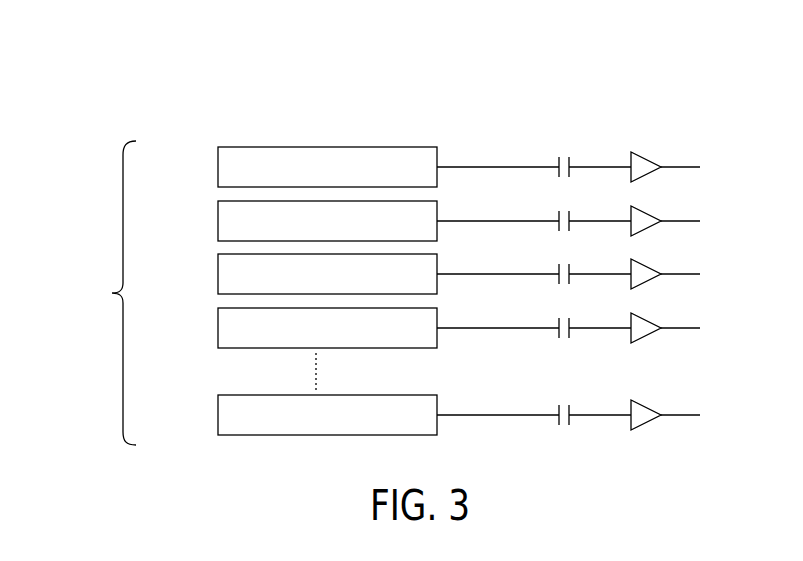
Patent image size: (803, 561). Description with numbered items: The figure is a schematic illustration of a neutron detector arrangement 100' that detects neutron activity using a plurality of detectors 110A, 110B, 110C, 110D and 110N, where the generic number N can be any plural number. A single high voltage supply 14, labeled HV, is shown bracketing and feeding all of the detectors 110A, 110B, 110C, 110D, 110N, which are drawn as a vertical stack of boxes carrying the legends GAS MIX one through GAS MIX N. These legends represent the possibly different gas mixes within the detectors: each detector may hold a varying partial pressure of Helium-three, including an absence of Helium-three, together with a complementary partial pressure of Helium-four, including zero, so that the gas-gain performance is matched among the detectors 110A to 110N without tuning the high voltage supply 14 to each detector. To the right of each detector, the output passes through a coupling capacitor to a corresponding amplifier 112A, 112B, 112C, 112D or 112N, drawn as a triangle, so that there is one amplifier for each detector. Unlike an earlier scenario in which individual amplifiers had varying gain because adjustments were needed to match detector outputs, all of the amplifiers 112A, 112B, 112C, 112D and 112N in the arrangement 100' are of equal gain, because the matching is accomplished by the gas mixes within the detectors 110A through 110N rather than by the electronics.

The arrangement 100' is at (524, 40).
The high voltage supply 14 is at (80, 292).
The detector 110A is at (218, 163).
The detector 110B is at (218, 217).
The detector 110C is at (218, 270).
The detector 110D is at (218, 324).
The detector 110N is at (218, 411).
The amplifier 112A is at (645, 158).
The amplifier 112B is at (645, 212).
The amplifier 112C is at (645, 265).
The amplifier 112D is at (645, 319).
The amplifier 112N is at (645, 406).